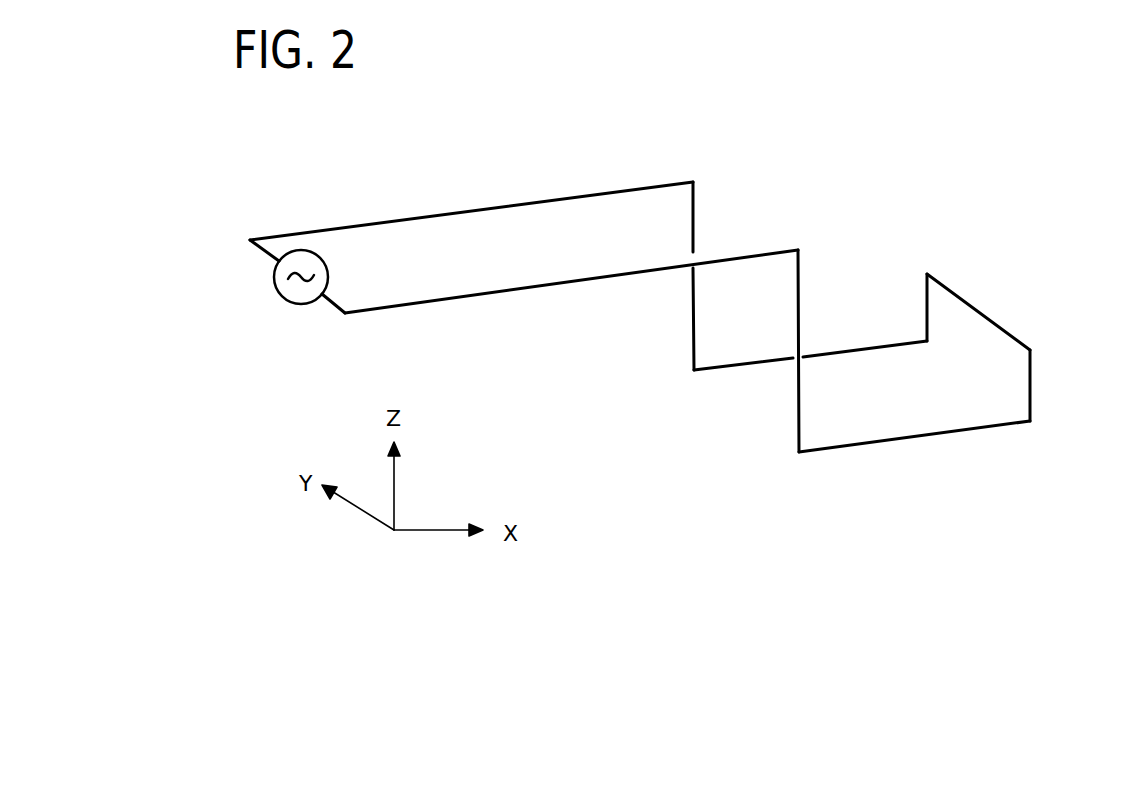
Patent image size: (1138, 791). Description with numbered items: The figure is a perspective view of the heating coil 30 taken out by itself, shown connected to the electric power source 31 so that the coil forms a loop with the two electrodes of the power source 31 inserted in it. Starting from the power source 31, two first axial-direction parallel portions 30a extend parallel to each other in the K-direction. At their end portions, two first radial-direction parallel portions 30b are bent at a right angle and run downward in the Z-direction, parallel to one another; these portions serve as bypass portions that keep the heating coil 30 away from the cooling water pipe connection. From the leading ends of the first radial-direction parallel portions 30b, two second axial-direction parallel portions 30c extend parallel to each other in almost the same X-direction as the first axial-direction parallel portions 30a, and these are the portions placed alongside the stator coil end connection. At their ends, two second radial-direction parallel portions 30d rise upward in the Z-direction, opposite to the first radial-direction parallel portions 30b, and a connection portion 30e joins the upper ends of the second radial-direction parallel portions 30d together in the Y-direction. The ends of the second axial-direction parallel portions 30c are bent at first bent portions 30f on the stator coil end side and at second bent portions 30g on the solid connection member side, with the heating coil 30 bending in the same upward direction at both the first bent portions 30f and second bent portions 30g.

The heating coil 30 is at (938, 180).
The first axial-direction parallel portions 30a is at (405, 218).
The first radial-direction parallel portions 30b is at (696, 203).
The second axial-direction parallel portions 30c is at (830, 356).
The second radial-direction parallel portions 30d is at (927, 297).
The connection portion 30e is at (972, 302).
The first bent portions 30f is at (927, 344).
The second bent portions 30g is at (694, 374).
The electric power source 31 is at (287, 300).